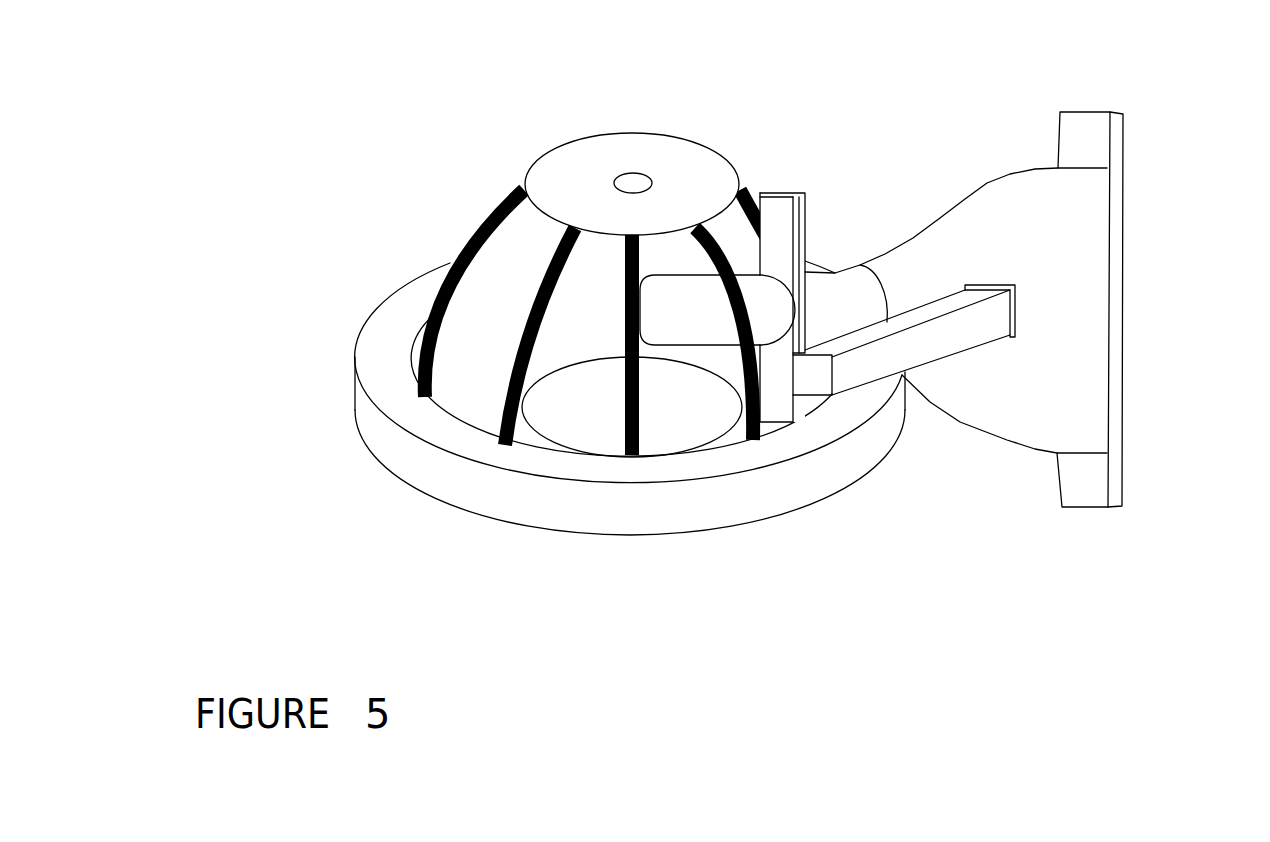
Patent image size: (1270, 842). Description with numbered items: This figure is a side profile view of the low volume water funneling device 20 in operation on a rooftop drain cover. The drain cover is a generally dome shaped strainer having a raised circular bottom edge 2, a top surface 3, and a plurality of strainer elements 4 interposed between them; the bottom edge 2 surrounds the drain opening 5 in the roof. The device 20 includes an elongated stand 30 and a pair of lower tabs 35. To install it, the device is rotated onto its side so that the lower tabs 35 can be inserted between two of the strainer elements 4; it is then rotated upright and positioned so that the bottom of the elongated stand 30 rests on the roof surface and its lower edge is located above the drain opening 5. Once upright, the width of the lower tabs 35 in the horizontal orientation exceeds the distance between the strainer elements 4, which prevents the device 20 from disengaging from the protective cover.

The raised circular bottom edge 2 is at (345, 388).
The top surface 3 is at (673, 160).
The strainer elements 4 is at (707, 250).
The drain opening 5 is at (576, 424).
The low volume water funneling device 20 is at (1108, 90).
The elongated stand 30 is at (963, 327).
The lower tabs 35 is at (780, 203).